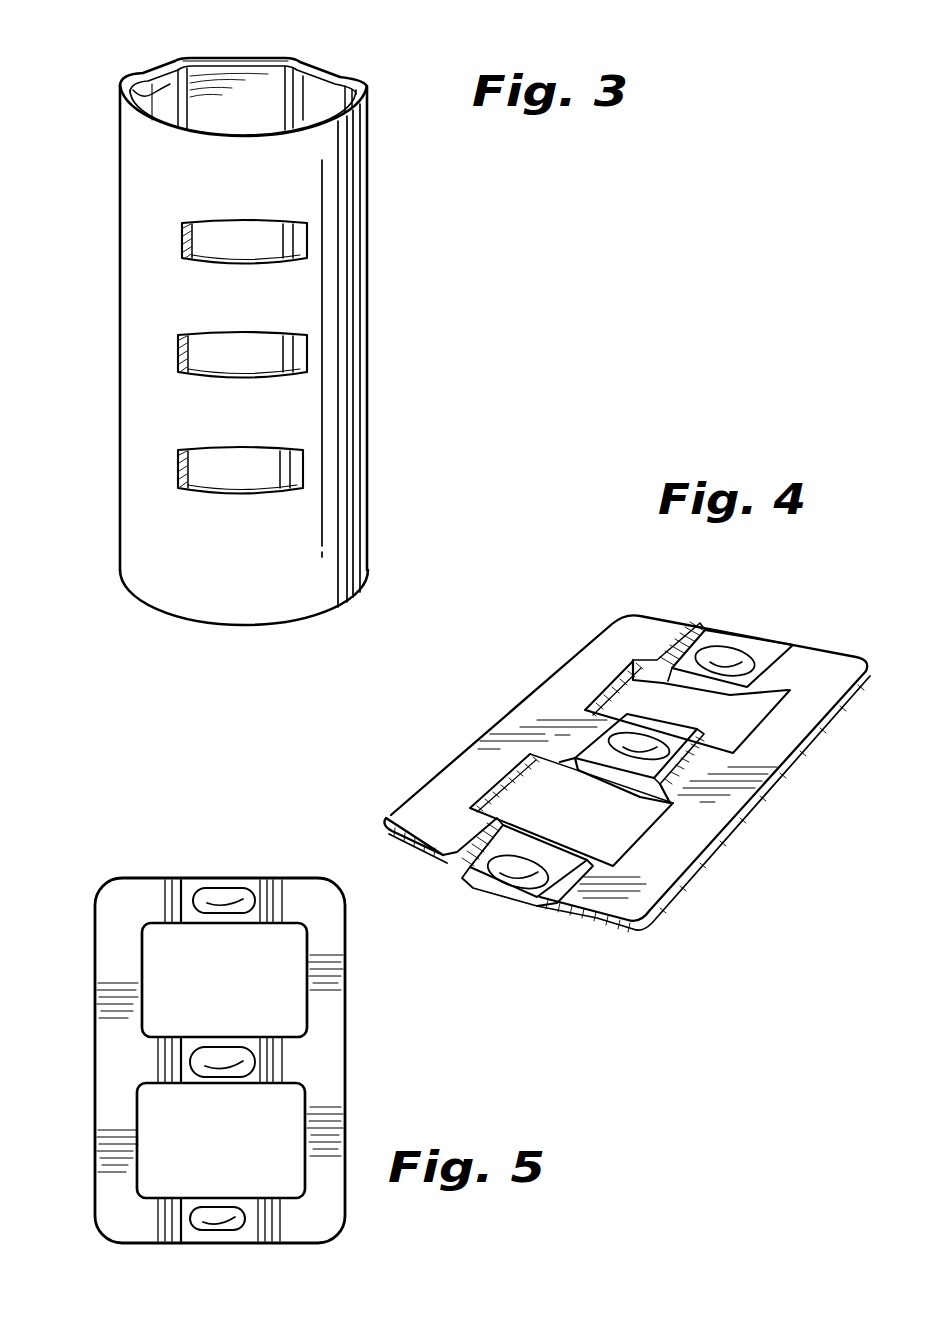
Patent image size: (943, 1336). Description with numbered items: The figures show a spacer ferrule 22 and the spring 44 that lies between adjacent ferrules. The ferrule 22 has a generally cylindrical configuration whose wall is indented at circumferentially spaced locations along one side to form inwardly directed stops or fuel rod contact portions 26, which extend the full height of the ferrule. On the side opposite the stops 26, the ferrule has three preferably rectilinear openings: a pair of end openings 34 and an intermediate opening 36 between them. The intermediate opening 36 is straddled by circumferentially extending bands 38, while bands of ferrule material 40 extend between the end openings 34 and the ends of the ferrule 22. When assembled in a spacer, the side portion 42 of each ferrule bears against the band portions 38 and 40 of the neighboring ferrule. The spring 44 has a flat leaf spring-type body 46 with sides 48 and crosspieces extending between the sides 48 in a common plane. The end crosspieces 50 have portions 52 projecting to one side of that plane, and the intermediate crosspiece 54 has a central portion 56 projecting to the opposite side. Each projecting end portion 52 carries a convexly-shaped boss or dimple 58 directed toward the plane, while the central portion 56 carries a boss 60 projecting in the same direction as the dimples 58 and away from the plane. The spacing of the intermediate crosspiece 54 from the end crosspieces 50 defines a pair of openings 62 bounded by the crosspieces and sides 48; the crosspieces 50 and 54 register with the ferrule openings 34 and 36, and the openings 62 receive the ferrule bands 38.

In FIG. 3, the spacer ferrule 22 is at (118, 175).
In FIG. 3, the fuel rod contact portions 26 is at (145, 86).
In FIG. 3, the end openings 34 is at (236, 248).
In FIG. 3, the intermediate opening 36 is at (213, 355).
In FIG. 3, the bands 38 is at (238, 303).
In FIG. 3, the bands of ferrule material 40 is at (287, 176).
In FIG. 3, the side portion 42 is at (226, 58).
In FIG. 4, the spring 44 is at (700, 853).
In FIG. 4, the flat leaf spring-type body 46 is at (537, 712).
In FIG. 4, the sides 48 is at (445, 790).
In FIG. 4, the end crosspieces 50 is at (813, 660).
In FIG. 5, the end crosspieces 50 is at (122, 884).
In FIG. 4, the projecting end portions 52 is at (733, 643).
In FIG. 5, the projecting end portions 52 is at (252, 884).
In FIG. 4, the intermediate crosspiece 54 is at (540, 760).
In FIG. 4, the central portion 56 is at (660, 728).
In FIG. 5, the central portion 56 is at (182, 1064).
In FIG. 4, the dimple 58 is at (653, 622).
In FIG. 5, the dimple 58 is at (209, 893).
In FIG. 4, the boss 60 is at (686, 760).
In FIG. 5, the boss 60 is at (192, 1057).
In FIG. 4, the openings 62 is at (615, 690).
In FIG. 5, the openings 62 is at (197, 988).